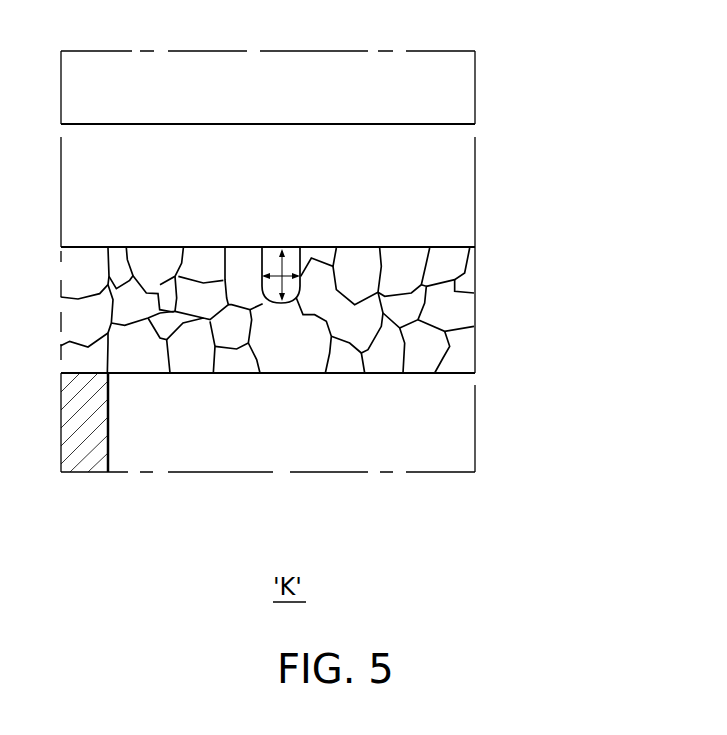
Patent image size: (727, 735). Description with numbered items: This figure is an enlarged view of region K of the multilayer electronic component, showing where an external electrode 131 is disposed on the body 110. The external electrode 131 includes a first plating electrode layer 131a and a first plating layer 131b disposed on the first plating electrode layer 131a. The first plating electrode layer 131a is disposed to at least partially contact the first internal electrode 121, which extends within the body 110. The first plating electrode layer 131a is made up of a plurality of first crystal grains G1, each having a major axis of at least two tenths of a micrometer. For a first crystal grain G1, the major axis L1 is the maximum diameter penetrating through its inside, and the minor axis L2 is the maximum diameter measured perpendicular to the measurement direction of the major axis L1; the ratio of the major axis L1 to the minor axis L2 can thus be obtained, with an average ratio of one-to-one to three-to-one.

The body 110 is at (422, 443).
The first internal electrode 121 is at (85, 447).
The external electrode 131 is at (351, 268).
The first plating electrode layer 131a is at (319, 268).
The first plating layer 131b is at (475, 193).
The first crystal grain G1 is at (266, 268).
The major axis L1 is at (284, 266).
The minor axis L2 is at (288, 278).